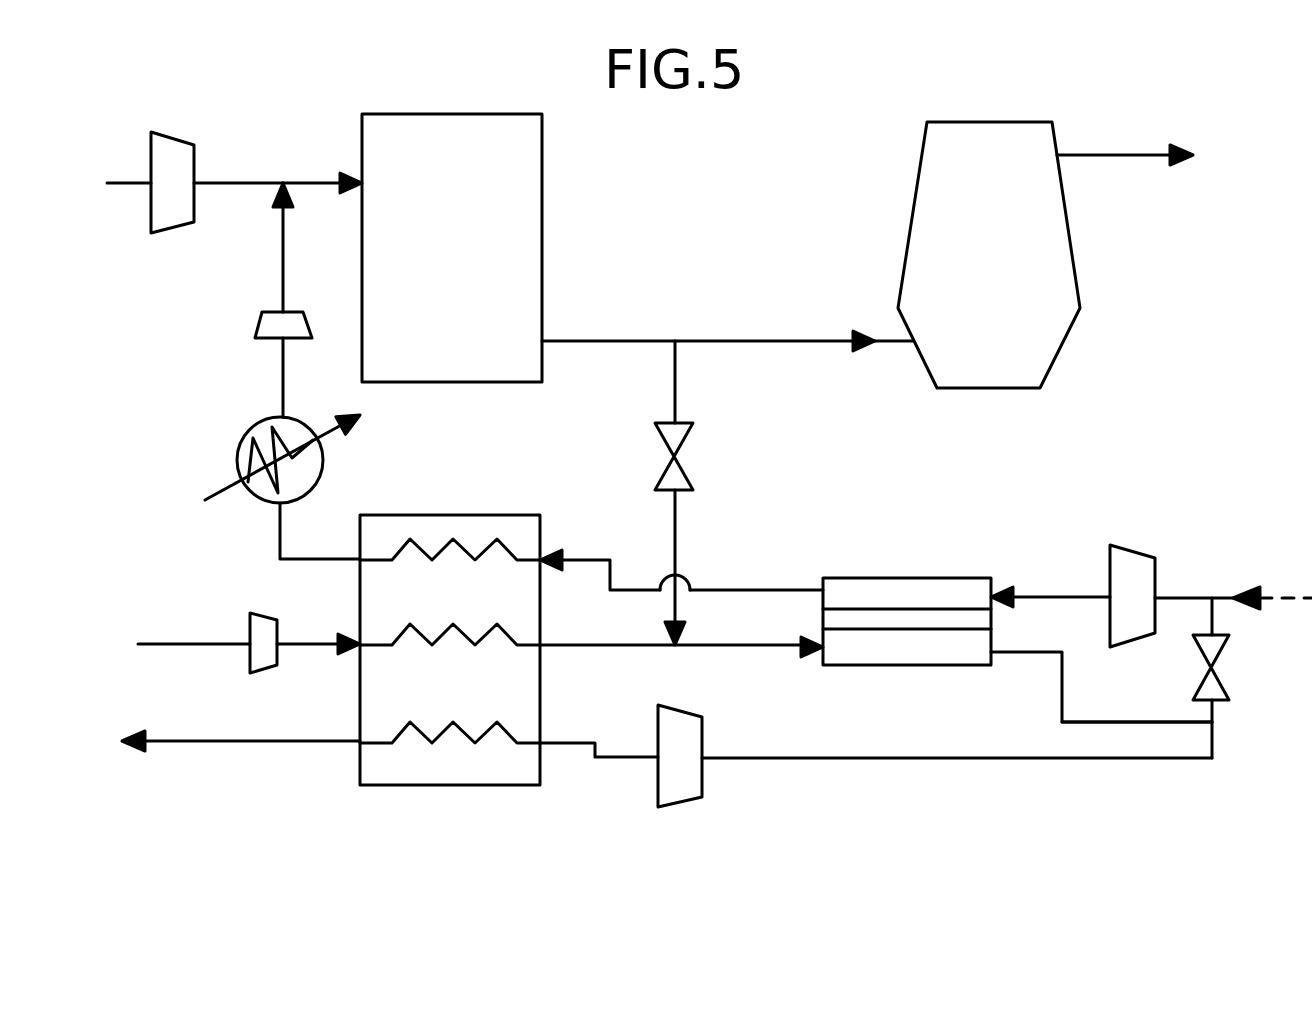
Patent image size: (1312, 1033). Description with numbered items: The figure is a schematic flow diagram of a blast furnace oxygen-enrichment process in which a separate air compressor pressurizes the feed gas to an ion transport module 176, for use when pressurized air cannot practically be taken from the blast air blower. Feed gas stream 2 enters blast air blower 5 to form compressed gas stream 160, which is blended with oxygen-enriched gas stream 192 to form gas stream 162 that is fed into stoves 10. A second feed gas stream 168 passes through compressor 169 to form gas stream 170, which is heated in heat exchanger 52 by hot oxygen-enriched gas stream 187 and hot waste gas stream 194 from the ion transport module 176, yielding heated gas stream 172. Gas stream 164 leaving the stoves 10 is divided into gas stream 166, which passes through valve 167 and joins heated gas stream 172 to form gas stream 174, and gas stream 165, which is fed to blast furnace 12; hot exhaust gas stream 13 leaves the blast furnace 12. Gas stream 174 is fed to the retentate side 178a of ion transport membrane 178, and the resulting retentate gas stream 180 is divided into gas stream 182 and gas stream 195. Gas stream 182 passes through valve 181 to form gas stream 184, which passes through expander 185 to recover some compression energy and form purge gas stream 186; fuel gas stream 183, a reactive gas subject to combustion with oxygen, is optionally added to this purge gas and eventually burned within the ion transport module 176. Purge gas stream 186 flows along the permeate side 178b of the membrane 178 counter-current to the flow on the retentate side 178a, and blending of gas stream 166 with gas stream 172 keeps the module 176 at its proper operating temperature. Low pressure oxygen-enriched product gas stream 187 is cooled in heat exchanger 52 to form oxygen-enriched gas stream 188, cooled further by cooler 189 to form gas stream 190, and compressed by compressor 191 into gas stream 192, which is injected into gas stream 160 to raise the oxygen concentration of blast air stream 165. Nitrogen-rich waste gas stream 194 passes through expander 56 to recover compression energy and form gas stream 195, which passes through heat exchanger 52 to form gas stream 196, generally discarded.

The feed gas stream 2 is at (130, 185).
The blast air blower 5 is at (170, 132).
The stoves 10 is at (542, 172).
The blast furnace 12 is at (920, 158).
The hot exhaust gas stream 13 is at (1138, 155).
The heat exchanger 52 is at (478, 786).
The expander 56 is at (703, 802).
The compressed gas stream 160 is at (248, 185).
The gas stream 162 is at (326, 183).
The gas stream 164 is at (598, 341).
The gas stream 165 is at (797, 341).
The gas stream 166 is at (676, 396).
The valve 167 is at (690, 473).
The second feed gas stream 168 is at (202, 643).
The compressor 169 is at (267, 668).
The gas stream 170 is at (314, 643).
The heated gas stream 172 is at (563, 646).
The gas stream 174 is at (750, 648).
The ion transport module 176 is at (955, 668).
The ion transport membrane 178 is at (993, 620).
The retentate side 178a is at (893, 631).
The permeate side 178b is at (950, 607).
The retentate gas stream 180 is at (1098, 722).
The valve 181 is at (1200, 652).
The gas stream 182 is at (1215, 708).
The fuel gas stream 183 is at (1282, 598).
The gas stream 184 is at (1184, 597).
The expander 185 is at (1142, 557).
The purge gas stream 186 is at (1075, 597).
The oxygen-enriched product gas stream 187 is at (596, 558).
The oxygen-enriched gas stream 188 is at (277, 528).
The cooler 189 is at (322, 472).
The gas stream 190 is at (283, 373).
The compressor 191 is at (258, 326).
The oxygen-enriched gas stream 192 is at (283, 272).
The nitrogen-rich waste gas stream 194 is at (898, 759).
The gas stream 195 is at (577, 757).
The gas stream 196 is at (203, 742).